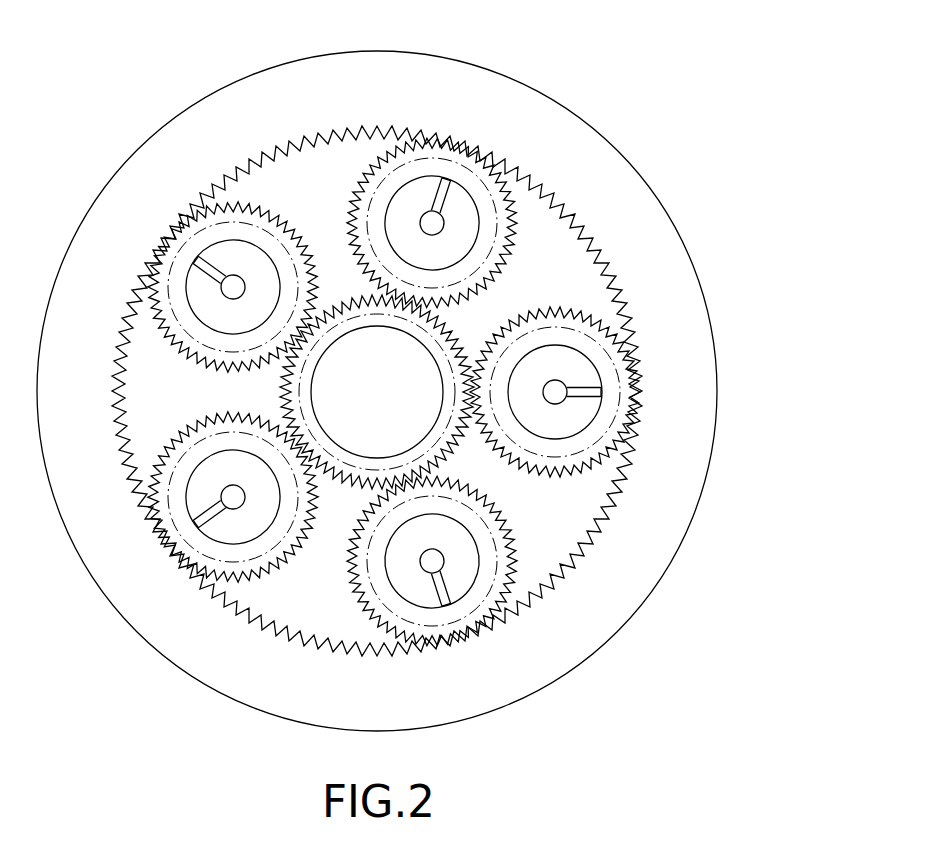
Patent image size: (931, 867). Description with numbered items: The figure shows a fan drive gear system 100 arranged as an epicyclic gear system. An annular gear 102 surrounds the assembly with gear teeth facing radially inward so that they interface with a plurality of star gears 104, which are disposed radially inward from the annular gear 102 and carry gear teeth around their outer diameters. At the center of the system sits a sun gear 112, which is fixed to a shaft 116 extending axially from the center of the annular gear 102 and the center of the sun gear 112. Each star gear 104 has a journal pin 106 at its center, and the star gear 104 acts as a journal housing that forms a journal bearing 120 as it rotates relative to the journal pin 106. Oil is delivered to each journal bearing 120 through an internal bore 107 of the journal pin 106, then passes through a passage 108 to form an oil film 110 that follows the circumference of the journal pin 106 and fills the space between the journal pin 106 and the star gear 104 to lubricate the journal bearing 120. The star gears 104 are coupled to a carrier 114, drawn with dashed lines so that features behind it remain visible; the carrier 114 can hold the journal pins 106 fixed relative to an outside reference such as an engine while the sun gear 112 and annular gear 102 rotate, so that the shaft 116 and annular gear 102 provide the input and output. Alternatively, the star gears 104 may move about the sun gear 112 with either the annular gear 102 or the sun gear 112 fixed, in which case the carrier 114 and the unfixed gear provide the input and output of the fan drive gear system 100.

The fan drive gear system 100 is at (80, 84).
The annular gear 102 is at (637, 190).
The star gear 104 is at (640, 373).
The journal pin 106 is at (583, 368).
The internal bore 107 is at (554, 395).
The passage 108 is at (578, 396).
The oil film 110 is at (580, 399).
The sun gear 112 is at (357, 323).
The carrier 114 is at (240, 393).
The shaft 116 is at (350, 362).
The journal bearing 120 is at (490, 228).